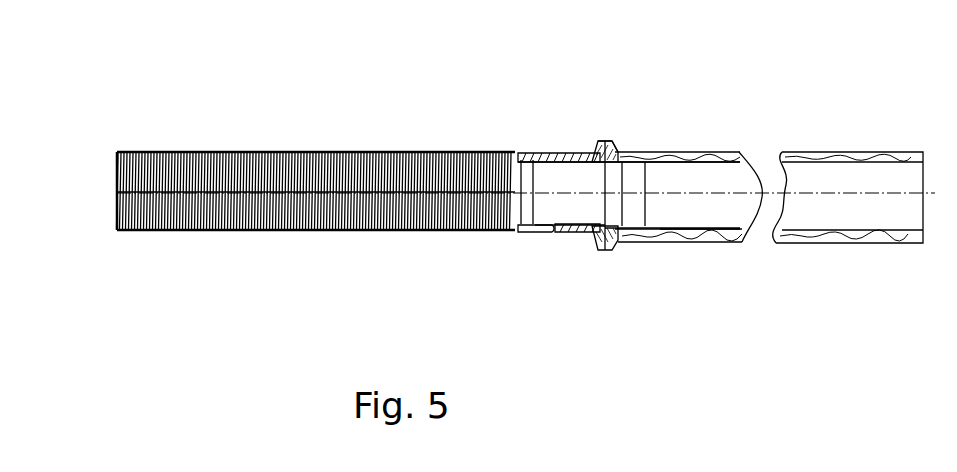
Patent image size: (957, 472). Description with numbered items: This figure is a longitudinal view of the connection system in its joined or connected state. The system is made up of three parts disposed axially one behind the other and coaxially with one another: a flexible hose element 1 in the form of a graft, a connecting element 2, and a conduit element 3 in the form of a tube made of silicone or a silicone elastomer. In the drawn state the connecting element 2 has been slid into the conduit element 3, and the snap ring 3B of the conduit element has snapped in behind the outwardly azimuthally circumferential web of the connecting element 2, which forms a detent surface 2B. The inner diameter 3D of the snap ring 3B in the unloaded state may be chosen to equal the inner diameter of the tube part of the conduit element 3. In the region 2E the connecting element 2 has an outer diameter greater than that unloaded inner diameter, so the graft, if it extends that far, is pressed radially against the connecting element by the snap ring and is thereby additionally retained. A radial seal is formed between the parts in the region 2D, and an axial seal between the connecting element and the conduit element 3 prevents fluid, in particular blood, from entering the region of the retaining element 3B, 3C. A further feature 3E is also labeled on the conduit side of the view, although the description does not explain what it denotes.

The flexible hose element 1 is at (400, 195).
The connecting element 2 is at (578, 203).
The detent surface 2B is at (592, 142).
The region of radial seal 2D is at (648, 220).
The region of the connecting element 2E is at (594, 250).
The conduit element 3 is at (700, 150).
The snap ring 3B is at (600, 140).
The retaining element 3C is at (611, 140).
The inner diameter of the snap ring 3D is at (603, 252).
The tube wall 3E is at (694, 214).